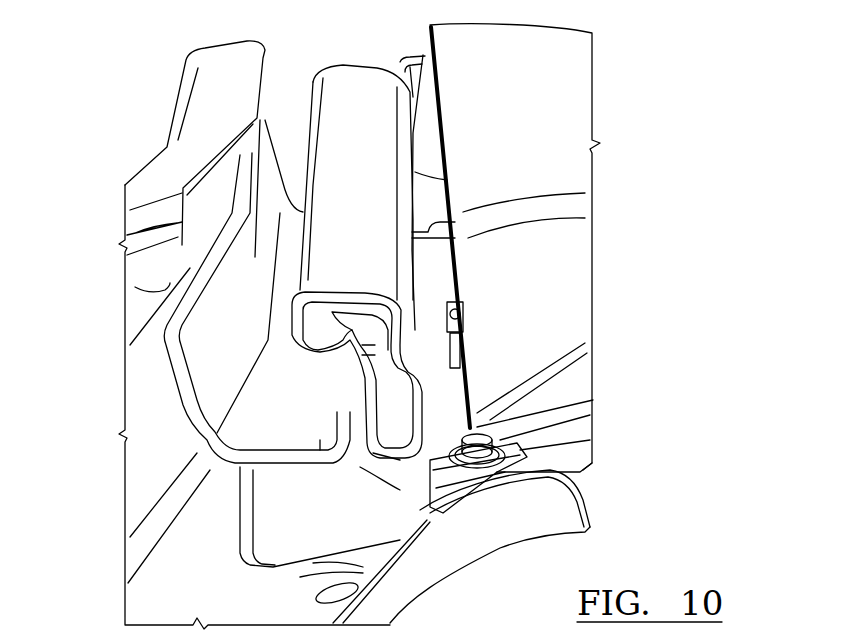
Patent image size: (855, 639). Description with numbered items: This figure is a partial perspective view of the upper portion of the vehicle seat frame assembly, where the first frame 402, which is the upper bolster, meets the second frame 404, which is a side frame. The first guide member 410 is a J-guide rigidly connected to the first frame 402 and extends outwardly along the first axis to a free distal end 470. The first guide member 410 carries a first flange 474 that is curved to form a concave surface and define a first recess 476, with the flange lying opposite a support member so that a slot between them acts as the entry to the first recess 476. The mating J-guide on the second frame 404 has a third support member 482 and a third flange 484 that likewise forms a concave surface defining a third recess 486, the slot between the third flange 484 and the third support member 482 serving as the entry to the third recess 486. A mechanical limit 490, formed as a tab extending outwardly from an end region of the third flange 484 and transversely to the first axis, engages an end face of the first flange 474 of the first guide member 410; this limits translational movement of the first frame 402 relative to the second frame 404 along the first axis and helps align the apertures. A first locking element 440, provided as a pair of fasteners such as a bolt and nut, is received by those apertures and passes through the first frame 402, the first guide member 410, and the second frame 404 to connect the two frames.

The first frame 402 is at (515, 92).
The second frame 404 is at (190, 573).
The first guide member 410 is at (363, 143).
The first locking element 440 is at (487, 447).
The distal end 470 is at (229, 359).
The first flange 474 is at (292, 326).
The first recess 476 is at (318, 341).
The third support member 482 is at (208, 350).
The third flange 484 is at (320, 440).
The third recess 486 is at (301, 433).
The mechanical limit 490 is at (385, 410).